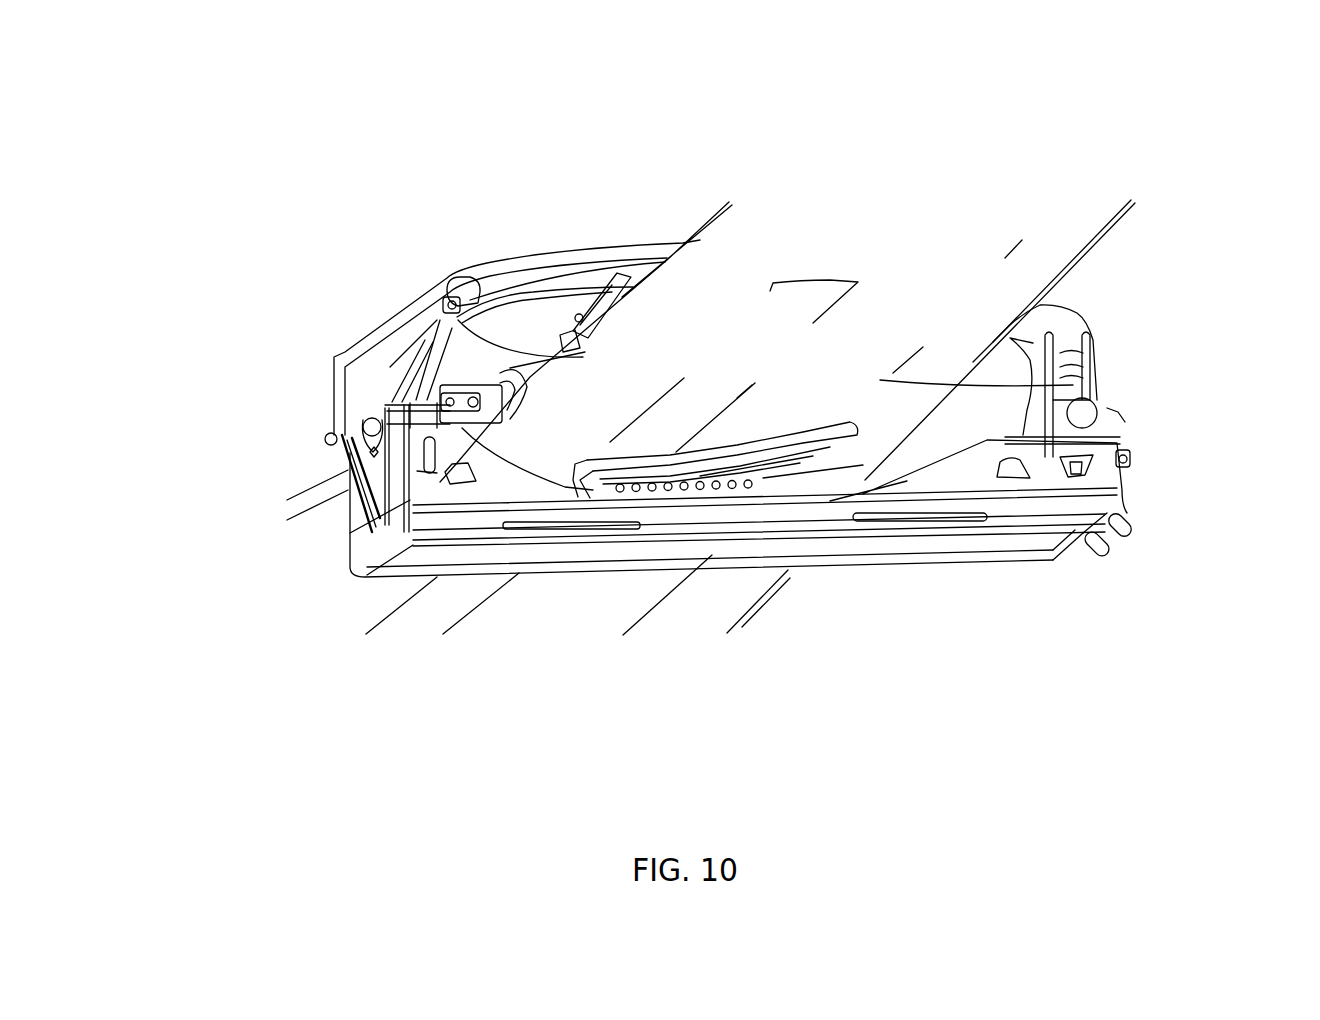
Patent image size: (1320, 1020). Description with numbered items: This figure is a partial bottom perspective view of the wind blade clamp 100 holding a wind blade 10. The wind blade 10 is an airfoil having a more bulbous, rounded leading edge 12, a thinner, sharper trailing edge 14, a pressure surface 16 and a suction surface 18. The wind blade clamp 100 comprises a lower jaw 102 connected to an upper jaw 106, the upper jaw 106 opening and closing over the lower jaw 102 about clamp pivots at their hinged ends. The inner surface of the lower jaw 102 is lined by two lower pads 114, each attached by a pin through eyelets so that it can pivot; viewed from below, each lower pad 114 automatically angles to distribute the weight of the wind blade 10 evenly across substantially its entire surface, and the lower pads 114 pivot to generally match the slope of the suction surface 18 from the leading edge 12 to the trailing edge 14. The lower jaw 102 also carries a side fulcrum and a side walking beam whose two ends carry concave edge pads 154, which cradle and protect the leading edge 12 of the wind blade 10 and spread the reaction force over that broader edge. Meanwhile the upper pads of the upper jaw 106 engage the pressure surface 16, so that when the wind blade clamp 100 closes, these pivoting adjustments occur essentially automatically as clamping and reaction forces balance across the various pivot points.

The wind blade clamp 100 is at (333, 95).
The wind blade 10 is at (359, 752).
The pressure surface 16 is at (703, 236).
The upper jaw 106 is at (357, 353).
The leading edge 12 is at (445, 300).
The edge pads 154 is at (348, 538).
The lower jaw 102 is at (665, 515).
The lower pads 114 is at (718, 455).
The trailing edge 14 is at (900, 452).
The suction surface 18 is at (1107, 377).